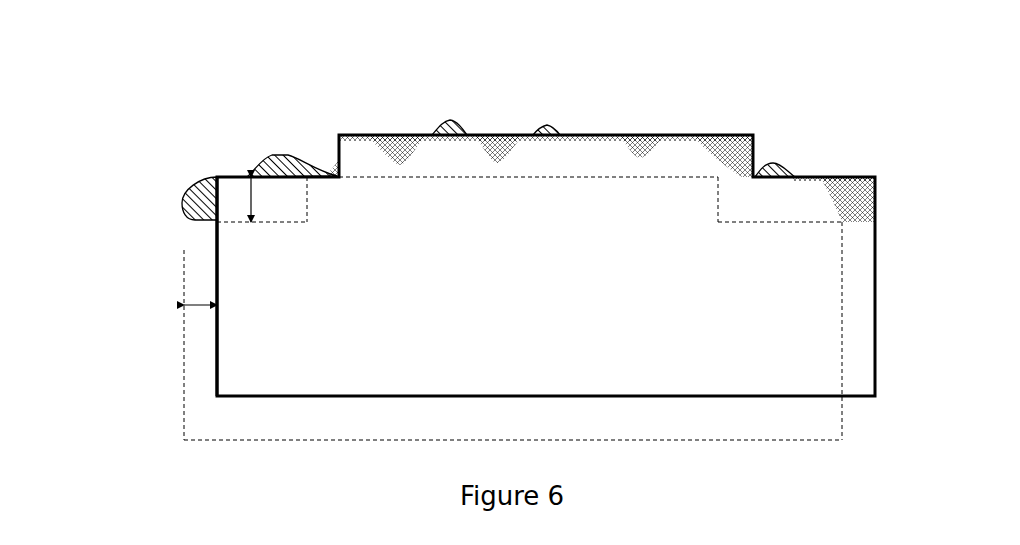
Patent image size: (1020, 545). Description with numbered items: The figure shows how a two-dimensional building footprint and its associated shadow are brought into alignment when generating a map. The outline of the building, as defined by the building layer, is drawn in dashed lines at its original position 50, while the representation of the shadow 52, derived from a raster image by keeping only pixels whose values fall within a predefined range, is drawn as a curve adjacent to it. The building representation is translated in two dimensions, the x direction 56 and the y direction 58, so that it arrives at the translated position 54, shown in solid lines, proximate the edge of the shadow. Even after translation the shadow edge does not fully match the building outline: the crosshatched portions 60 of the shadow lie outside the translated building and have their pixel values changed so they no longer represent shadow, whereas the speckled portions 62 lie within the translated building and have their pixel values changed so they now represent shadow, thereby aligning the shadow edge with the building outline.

The 2D footprint of the building in original position 50 is at (798, 342).
The representation of the shadow 52 is at (443, 127).
The translated position of the building representation 54 is at (213, 248).
The x direction 56 is at (187, 300).
The y direction 58 is at (250, 187).
The crosshatched portions of the shadow representation 60 is at (270, 155).
The speckled portions within the translated building representation 62 is at (492, 145).